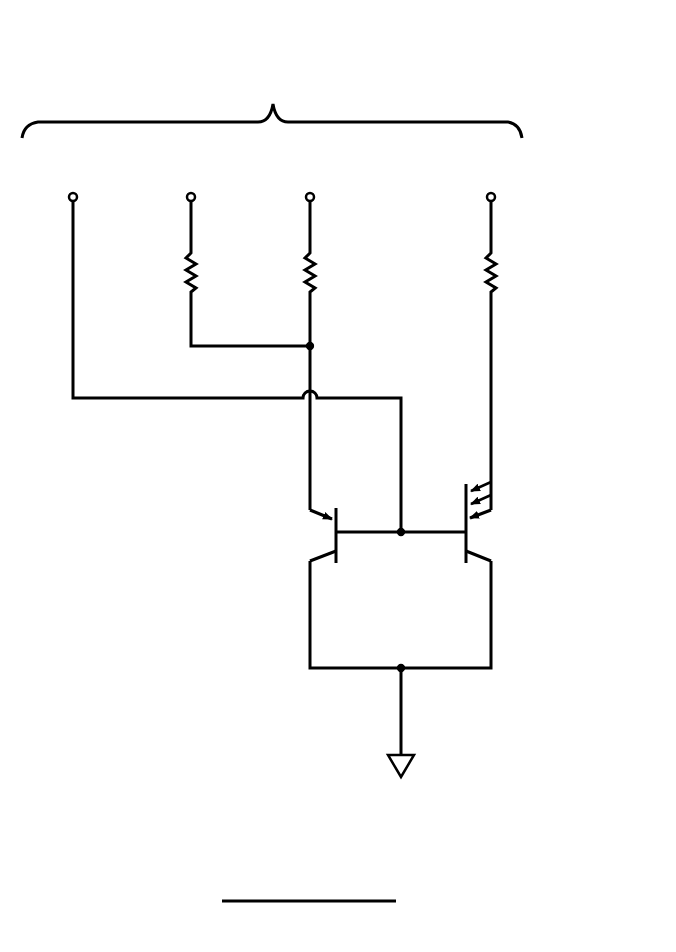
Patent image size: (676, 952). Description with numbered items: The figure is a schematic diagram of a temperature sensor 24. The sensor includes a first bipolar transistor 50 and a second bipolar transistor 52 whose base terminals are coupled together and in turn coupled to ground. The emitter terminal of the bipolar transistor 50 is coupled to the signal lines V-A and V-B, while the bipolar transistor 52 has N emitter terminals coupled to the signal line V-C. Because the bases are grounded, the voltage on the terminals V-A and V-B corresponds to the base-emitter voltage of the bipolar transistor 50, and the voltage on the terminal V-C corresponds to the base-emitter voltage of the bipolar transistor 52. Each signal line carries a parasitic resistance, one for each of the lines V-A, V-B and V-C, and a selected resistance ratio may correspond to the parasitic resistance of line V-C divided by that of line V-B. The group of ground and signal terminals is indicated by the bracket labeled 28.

The temperature sensor 24 is at (118, 53).
The terminals / contact pads 28 is at (272, 140).
The first bipolar transistor 50 is at (317, 538).
The second bipolar transistor 52 is at (485, 538).